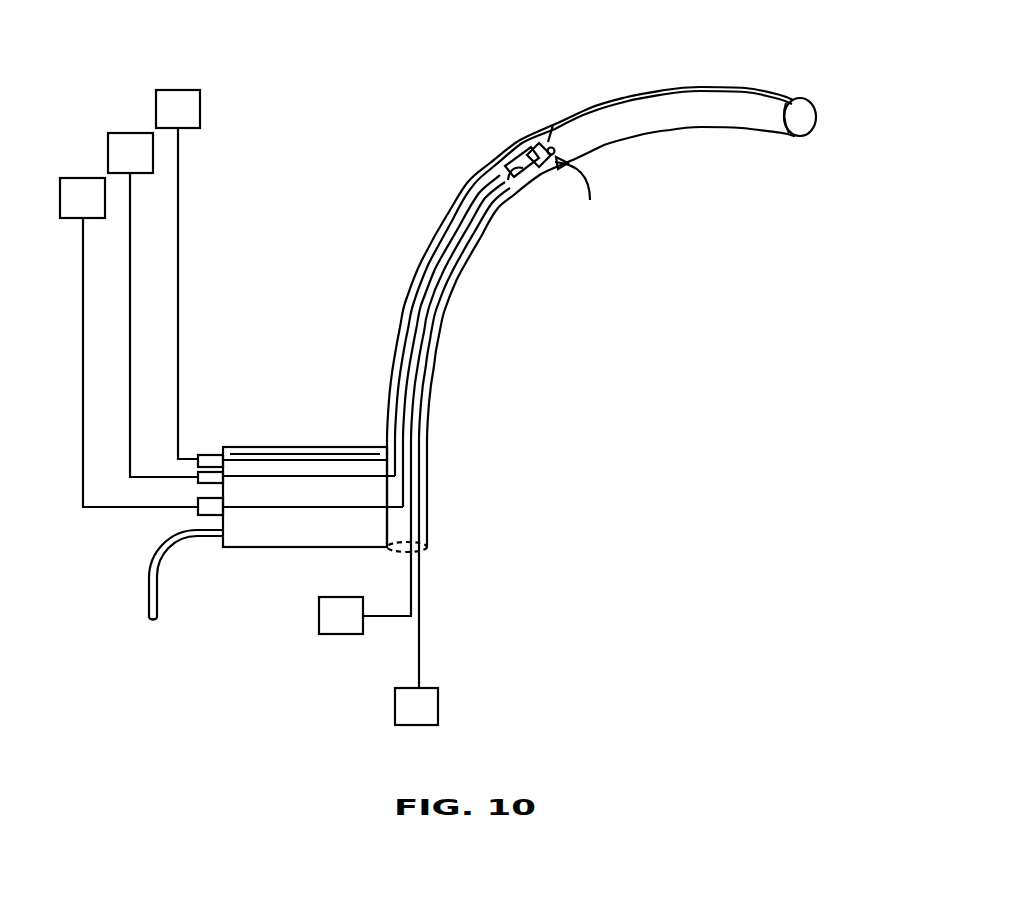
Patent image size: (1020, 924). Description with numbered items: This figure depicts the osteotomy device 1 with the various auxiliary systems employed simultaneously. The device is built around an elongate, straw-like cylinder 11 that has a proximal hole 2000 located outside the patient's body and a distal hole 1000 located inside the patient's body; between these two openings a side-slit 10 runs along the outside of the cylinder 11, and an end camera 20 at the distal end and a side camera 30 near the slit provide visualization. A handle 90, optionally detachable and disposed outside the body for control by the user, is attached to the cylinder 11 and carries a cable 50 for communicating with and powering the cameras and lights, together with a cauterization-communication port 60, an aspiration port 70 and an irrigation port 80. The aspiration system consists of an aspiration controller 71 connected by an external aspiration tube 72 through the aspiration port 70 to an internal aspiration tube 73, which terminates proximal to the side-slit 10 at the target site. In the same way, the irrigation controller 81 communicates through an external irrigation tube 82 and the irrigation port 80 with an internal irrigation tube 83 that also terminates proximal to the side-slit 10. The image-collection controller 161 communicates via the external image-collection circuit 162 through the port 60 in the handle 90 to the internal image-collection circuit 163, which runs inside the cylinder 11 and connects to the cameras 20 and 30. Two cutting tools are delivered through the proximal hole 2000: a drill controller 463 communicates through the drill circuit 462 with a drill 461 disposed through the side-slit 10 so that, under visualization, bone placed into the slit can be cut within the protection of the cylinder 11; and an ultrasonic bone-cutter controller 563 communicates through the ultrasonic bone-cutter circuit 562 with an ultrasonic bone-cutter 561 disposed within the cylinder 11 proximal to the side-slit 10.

The osteotomy device 1 is at (515, 118).
The side-slit 10 is at (568, 160).
The cylinder 11 is at (490, 165).
The end camera 20 is at (800, 137).
The side camera 30 is at (537, 188).
The cable 50 is at (149, 588).
The cauterization-communication port 60 is at (200, 517).
The aspiration port 70 is at (200, 486).
The aspiration controller 71 is at (130, 133).
The external aspiration tube 72 is at (130, 204).
The internal aspiration tube 73 is at (278, 474).
The irrigation port 80 is at (212, 455).
The irrigation controller 81 is at (178, 90).
The external irrigation tube 82 is at (178, 162).
The internal irrigation tube 83 is at (421, 262).
The handle 90 is at (366, 447).
The image-collection controller 161 is at (83, 178).
The external image-collection circuit 162 is at (83, 237).
The internal image-collection circuit 163 is at (672, 92).
The drill 461 is at (553, 124).
The drill circuit 462 is at (386, 618).
The drill controller 463 is at (340, 597).
The ultrasonic bone-cutter 561 is at (556, 168).
The ultrasonic bone-cutter circuit 562 is at (442, 320).
The ultrasonic bone-cutter controller 563 is at (394, 705).
The distal hole 1000 is at (812, 117).
The proximal hole 2000 is at (422, 556).